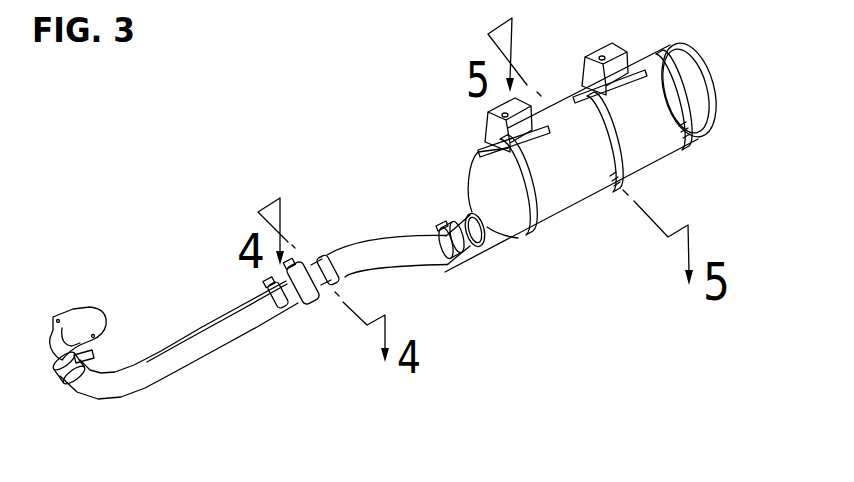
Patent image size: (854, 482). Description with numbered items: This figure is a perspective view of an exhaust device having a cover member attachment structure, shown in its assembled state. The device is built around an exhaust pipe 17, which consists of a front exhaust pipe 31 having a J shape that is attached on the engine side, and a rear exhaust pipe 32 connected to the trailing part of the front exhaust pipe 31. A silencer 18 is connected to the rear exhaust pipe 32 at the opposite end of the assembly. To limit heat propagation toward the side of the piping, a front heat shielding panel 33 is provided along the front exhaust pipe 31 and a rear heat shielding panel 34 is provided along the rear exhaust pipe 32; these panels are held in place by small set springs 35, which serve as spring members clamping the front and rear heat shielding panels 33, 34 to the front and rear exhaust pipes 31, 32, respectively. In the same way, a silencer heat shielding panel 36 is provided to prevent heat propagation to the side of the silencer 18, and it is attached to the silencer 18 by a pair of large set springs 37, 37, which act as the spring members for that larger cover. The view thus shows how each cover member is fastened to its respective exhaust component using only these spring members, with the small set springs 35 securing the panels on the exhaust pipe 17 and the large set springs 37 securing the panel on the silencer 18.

The exhaust pipe 17 is at (208, 306).
The silencer 18 is at (460, 171).
The front exhaust pipe 31 is at (158, 348).
The rear exhaust pipe 32 is at (382, 237).
The front heat shielding panel 33 is at (200, 365).
The rear heat shielding panel 34 is at (437, 275).
The small set spring 35 is at (467, 257).
The silencer heat shielding panel 36 is at (572, 210).
The large set spring 37 is at (618, 188).